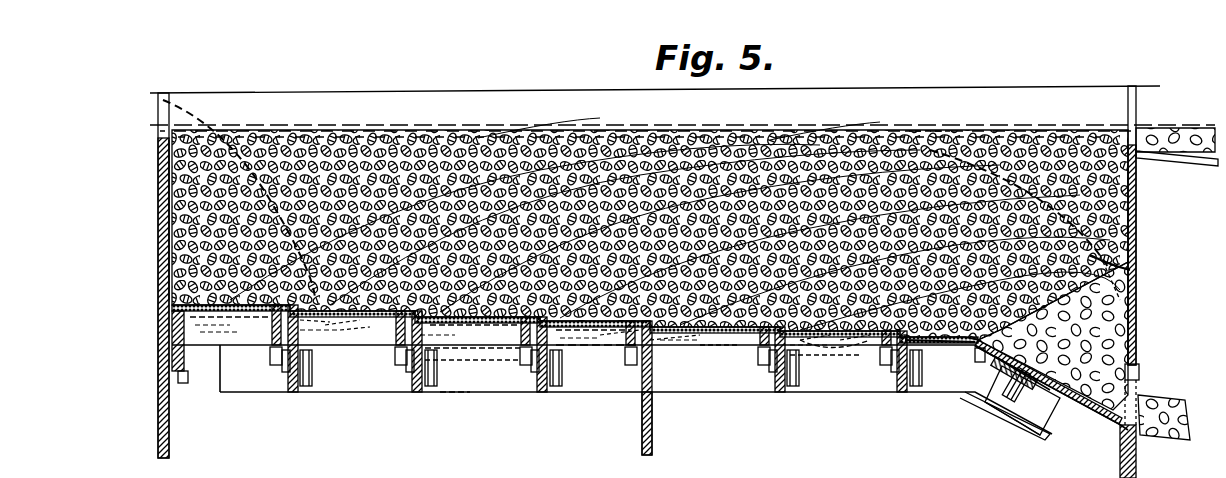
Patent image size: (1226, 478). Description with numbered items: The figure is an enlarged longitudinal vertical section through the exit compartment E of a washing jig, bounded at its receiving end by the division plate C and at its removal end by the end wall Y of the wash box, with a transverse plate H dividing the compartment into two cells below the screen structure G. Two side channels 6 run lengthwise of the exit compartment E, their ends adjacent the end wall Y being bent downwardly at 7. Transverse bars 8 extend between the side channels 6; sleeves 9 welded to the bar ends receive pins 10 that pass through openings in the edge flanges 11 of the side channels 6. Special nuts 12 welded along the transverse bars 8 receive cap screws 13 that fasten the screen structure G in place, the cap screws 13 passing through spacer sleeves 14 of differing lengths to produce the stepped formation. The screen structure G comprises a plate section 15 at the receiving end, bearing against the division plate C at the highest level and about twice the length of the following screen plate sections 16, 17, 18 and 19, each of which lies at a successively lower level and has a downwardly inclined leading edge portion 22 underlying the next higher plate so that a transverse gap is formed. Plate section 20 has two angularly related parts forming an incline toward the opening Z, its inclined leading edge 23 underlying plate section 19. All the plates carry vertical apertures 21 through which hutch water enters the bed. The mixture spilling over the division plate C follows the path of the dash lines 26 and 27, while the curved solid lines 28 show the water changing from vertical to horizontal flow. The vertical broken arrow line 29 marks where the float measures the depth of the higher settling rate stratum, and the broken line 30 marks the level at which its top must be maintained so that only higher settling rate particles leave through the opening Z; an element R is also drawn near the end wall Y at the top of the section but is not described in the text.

The side channel 6 is at (456, 392).
The downwardly bent end 7 is at (1036, 426).
The transverse bar 8 is at (293, 392).
The sleeve 9 is at (312, 386).
The pin 10 is at (300, 320).
The edge flange 11 is at (446, 347).
The nut 12 is at (281, 370).
The cap screw 13 is at (272, 312).
The spacer sleeve 14 is at (276, 348).
The plate section 15 is at (206, 312).
The screen plate section 16 is at (482, 320).
The screen plate section 17 is at (597, 323).
The screen plate section 18 is at (720, 345).
The screen plate section 19 is at (850, 360).
The plate section 20 is at (1022, 400).
The aperture 21 is at (1080, 410).
The leading edge portion 22 is at (522, 364).
The leading edge 23 is at (926, 345).
The dash line 26 is at (158, 226).
The dash line 27 is at (202, 121).
The curved solid line 28 is at (478, 138).
The vertical broken arrow line 29 is at (926, 131).
The broken line 30 is at (1131, 270).
The division plate C is at (162, 146).
The exit compartment E is at (693, 268).
The screen structure G is at (598, 355).
The transverse plate H is at (644, 426).
The overflow chute R is at (1170, 160).
The end wall Y is at (1139, 350).
The opening Z is at (1140, 372).